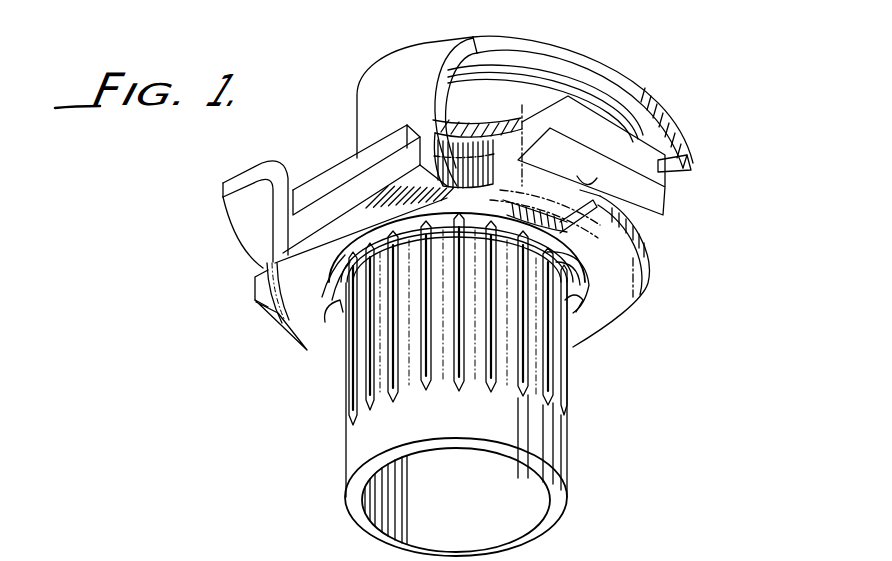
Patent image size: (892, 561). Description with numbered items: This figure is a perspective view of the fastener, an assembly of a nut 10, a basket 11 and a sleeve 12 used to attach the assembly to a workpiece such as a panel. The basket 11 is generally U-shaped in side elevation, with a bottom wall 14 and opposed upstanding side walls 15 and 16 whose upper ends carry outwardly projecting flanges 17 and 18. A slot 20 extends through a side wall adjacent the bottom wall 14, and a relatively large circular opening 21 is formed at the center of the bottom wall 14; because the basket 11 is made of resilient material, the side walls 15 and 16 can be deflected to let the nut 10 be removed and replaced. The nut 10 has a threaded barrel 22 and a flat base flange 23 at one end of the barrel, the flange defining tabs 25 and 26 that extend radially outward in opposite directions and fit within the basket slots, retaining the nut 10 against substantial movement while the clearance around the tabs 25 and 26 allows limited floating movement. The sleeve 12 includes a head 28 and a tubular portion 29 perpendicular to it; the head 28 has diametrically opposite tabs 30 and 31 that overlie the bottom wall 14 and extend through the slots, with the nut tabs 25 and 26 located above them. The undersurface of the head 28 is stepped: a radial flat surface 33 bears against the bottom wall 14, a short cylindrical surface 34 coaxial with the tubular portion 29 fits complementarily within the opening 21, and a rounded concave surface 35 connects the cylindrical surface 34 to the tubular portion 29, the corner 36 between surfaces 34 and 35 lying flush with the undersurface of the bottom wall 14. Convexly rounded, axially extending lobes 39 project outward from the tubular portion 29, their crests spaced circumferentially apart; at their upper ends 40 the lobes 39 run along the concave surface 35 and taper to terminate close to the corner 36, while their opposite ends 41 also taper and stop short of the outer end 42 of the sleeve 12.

The nut 10 is at (386, 50).
The basket 11 is at (678, 262).
The sleeve 12 is at (569, 467).
The bottom wall 14 is at (580, 333).
The side wall 15 is at (263, 242).
The side wall 16 is at (450, 93).
The flange 17 is at (225, 193).
The flange 18 is at (643, 95).
The slot 20 is at (528, 112).
The circular opening 21 is at (568, 247).
The threaded barrel 22 is at (365, 102).
The base flange 23 is at (413, 125).
The tab 25 is at (254, 289).
The tab 26 is at (658, 162).
The head 28 is at (332, 203).
The tubular portion 29 is at (346, 457).
The tab 30 is at (256, 313).
The tab 31 is at (665, 198).
The radial flat surface 33 is at (395, 193).
The cylindrical surface 34 is at (563, 222).
The rounded concave surface 35 is at (574, 288).
The corner 36 is at (337, 264).
The lobes 39 is at (370, 383).
The upper ends 40 is at (336, 308).
The opposite ends 41 is at (347, 447).
The outer end 42 is at (556, 515).